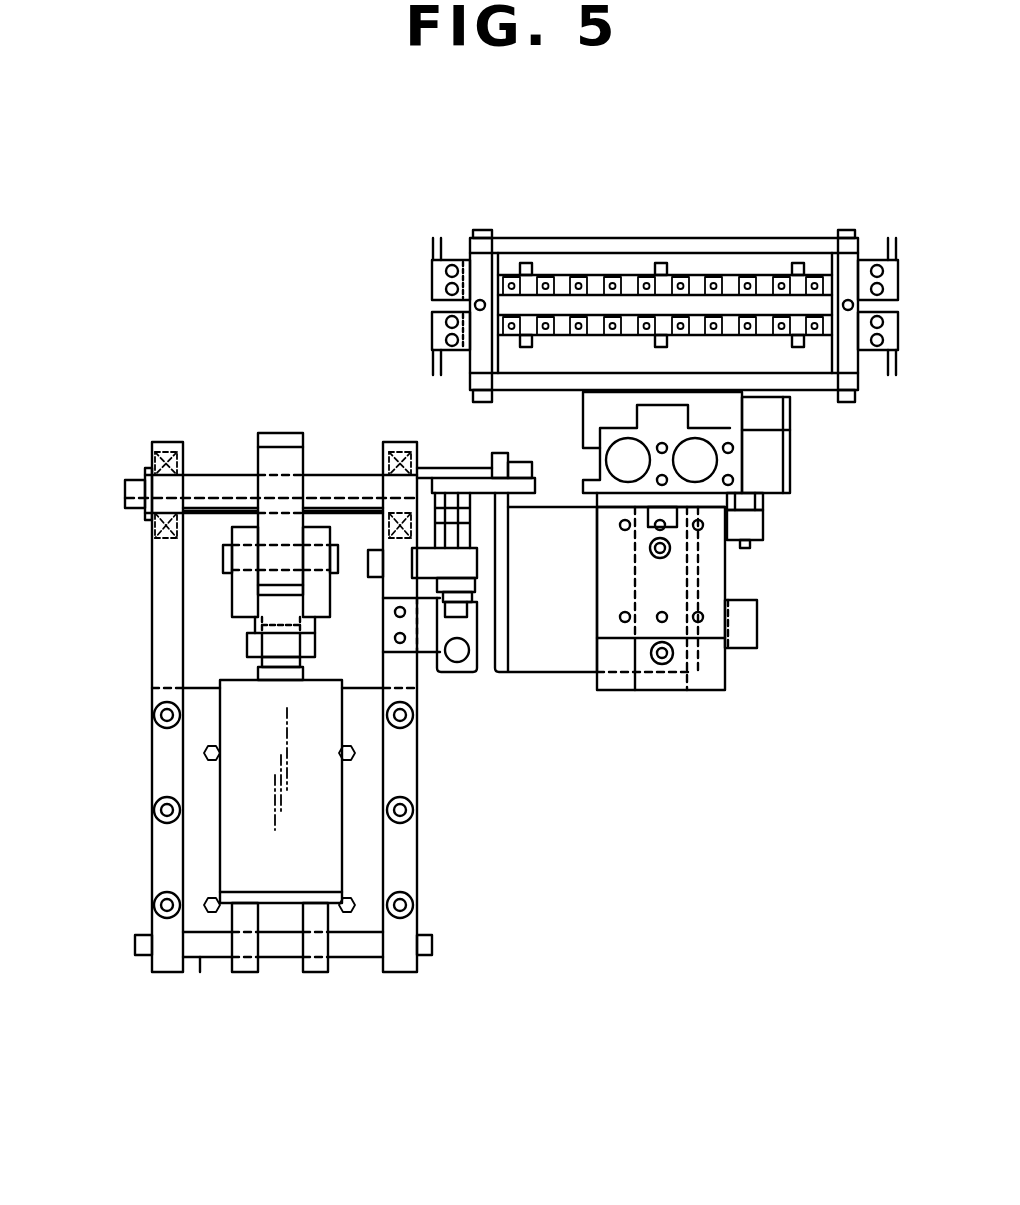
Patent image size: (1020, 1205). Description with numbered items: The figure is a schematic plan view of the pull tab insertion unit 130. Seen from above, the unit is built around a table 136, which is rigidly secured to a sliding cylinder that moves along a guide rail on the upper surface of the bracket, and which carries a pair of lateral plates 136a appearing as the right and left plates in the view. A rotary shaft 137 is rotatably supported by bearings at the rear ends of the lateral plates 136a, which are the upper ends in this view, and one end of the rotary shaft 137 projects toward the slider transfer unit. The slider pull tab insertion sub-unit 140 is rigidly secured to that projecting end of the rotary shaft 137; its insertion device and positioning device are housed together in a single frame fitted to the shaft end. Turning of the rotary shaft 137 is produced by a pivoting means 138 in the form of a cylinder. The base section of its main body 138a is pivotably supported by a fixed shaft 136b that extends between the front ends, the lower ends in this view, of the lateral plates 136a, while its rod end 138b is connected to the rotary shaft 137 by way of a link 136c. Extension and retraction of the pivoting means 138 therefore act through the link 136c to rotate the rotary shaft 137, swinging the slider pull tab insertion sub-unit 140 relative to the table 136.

The pull tab insertion unit 130 is at (295, 207).
The table 136 is at (368, 752).
The lateral plates 136a is at (403, 870).
The fixed shaft 136b is at (357, 942).
The link 136c is at (260, 460).
The rotary shaft 137 is at (337, 488).
The pivoting means 138 is at (343, 825).
The main body 138a is at (250, 843).
The rod end 138b is at (320, 605).
The slider pull tab insertion sub-unit 140 is at (782, 567).